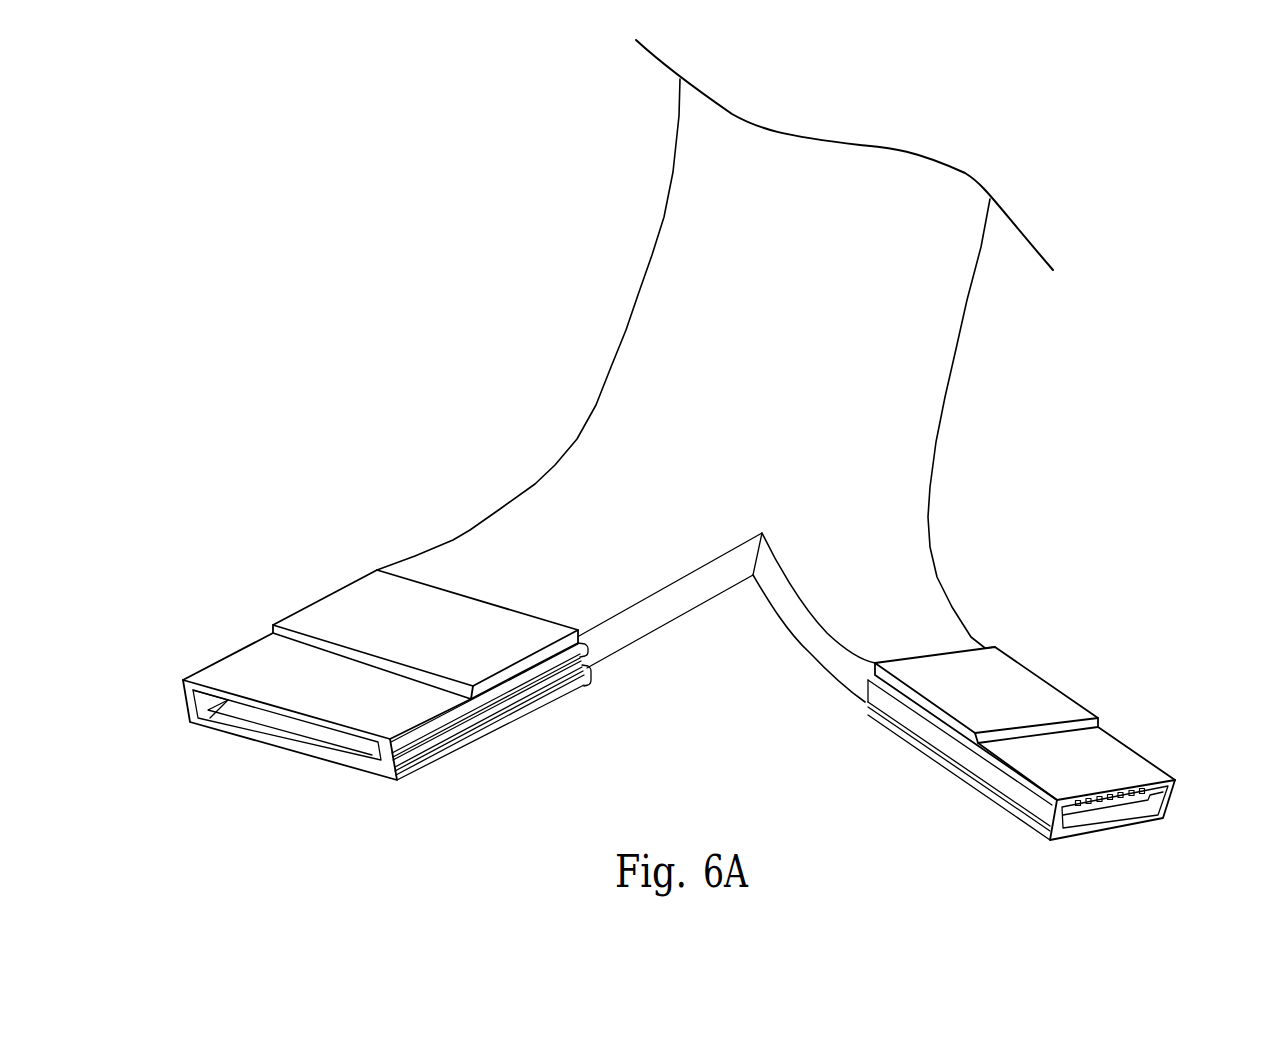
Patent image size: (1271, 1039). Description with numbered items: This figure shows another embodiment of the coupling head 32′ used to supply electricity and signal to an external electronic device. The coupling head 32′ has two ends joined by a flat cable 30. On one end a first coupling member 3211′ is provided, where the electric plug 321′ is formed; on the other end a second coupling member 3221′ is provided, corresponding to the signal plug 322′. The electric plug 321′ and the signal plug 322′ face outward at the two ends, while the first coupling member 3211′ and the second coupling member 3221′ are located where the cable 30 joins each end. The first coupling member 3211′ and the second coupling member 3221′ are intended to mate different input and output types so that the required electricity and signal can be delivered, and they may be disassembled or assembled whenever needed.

The flat cable 30 is at (577, 364).
The coupling head 32′ is at (384, 660).
The electric plug 321′ is at (302, 730).
The first coupling member 3211′ is at (450, 747).
The signal plug 322′ is at (1108, 812).
The second coupling member 3221′ is at (1013, 818).